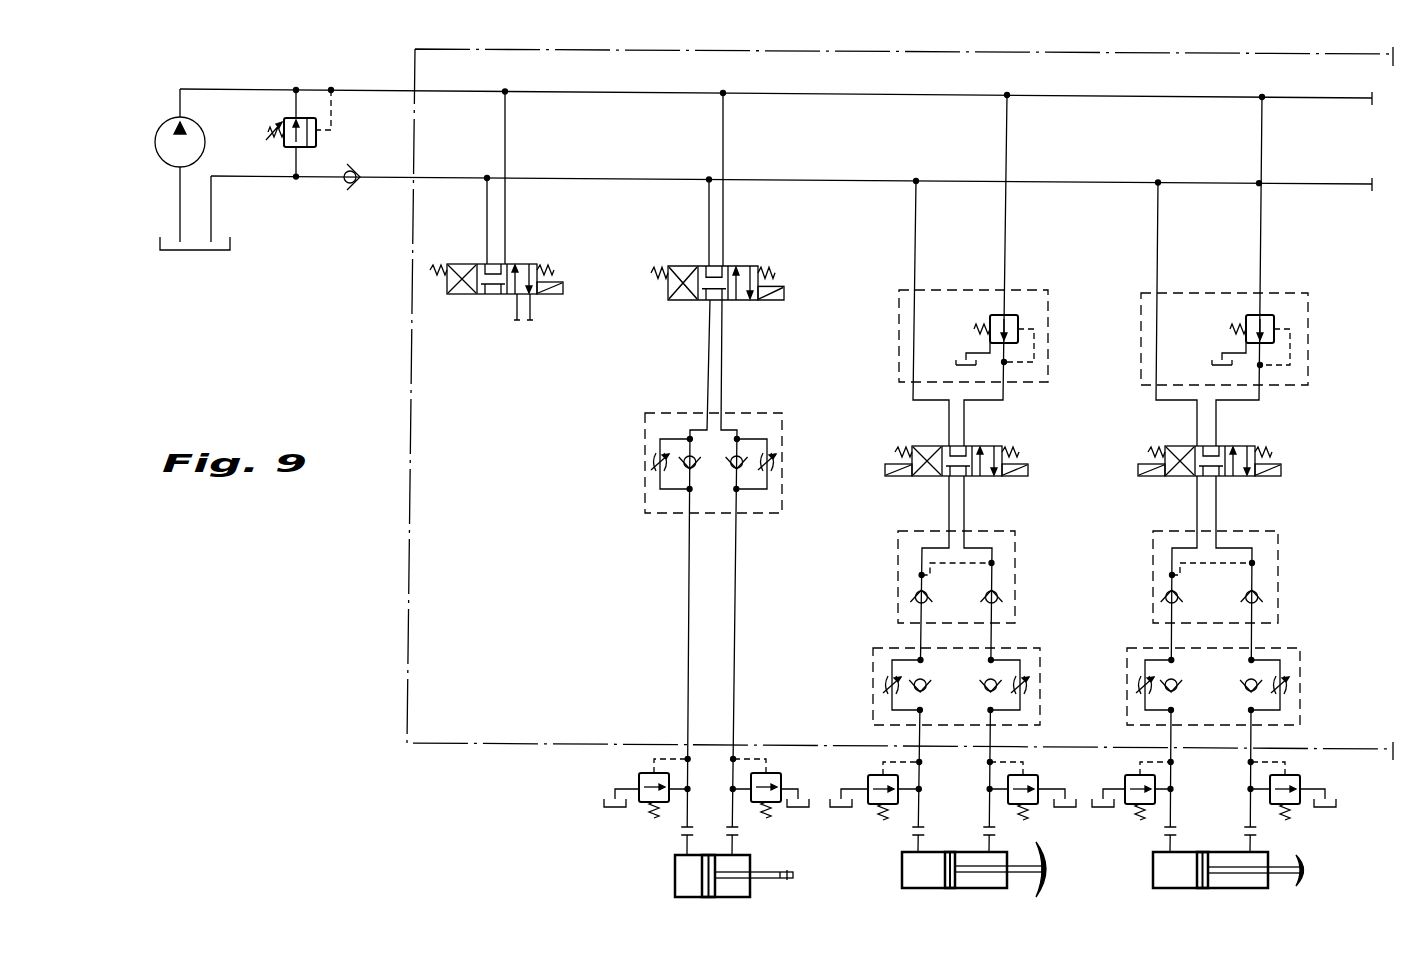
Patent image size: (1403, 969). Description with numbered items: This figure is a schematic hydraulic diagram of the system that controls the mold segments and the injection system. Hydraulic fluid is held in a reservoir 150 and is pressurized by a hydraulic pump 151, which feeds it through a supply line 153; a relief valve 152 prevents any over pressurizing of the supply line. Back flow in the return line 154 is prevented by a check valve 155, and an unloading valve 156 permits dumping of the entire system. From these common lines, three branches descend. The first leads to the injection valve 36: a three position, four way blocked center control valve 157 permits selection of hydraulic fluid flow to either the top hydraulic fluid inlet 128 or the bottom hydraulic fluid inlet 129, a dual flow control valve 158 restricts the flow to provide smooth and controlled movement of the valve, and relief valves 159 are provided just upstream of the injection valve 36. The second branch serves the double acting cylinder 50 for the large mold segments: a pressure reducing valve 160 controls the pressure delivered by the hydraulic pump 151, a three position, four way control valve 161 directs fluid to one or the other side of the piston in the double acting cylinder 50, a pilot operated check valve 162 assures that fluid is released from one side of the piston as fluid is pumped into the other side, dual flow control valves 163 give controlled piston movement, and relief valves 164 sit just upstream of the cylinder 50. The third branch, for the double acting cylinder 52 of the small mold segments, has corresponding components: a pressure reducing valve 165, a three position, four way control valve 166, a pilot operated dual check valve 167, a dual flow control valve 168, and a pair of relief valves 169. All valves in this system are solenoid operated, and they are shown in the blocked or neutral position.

The reservoir for the hydraulic fluid 150 is at (192, 250).
The hydraulic pump 151 is at (168, 152).
The relief valve 152 is at (286, 118).
The supply line 153 is at (469, 91).
The return line 154 is at (392, 181).
The check valve 155 is at (350, 186).
The unloading valve 156 is at (485, 295).
The three position, four way blocked center control valve 157 is at (745, 265).
The dual flow control valve 158 is at (645, 483).
The relief valves 159 is at (639, 780).
The pressure reducing valve 160 is at (1018, 290).
The three position, four way control valve 161 is at (1003, 478).
The pilot operated check valve 162 is at (1016, 569).
The dual flow control valves 163 is at (873, 667).
The relief valves 164 is at (876, 806).
The pressure reducing valve 165 is at (1308, 315).
The three position, four way control valve 166 is at (1280, 481).
The pilot operated dual check valve 167 is at (1280, 576).
The dual flow control valve 168 is at (1302, 692).
The relief valves 169 is at (1302, 786).
The top hydraulic fluid inlet 128 is at (682, 838).
The bottom hydraulic fluid inlet 129 is at (739, 841).
The injection valve 36 is at (675, 895).
The double acting cylinder 50 is at (902, 882).
The double acting cylinder 52 is at (1237, 890).